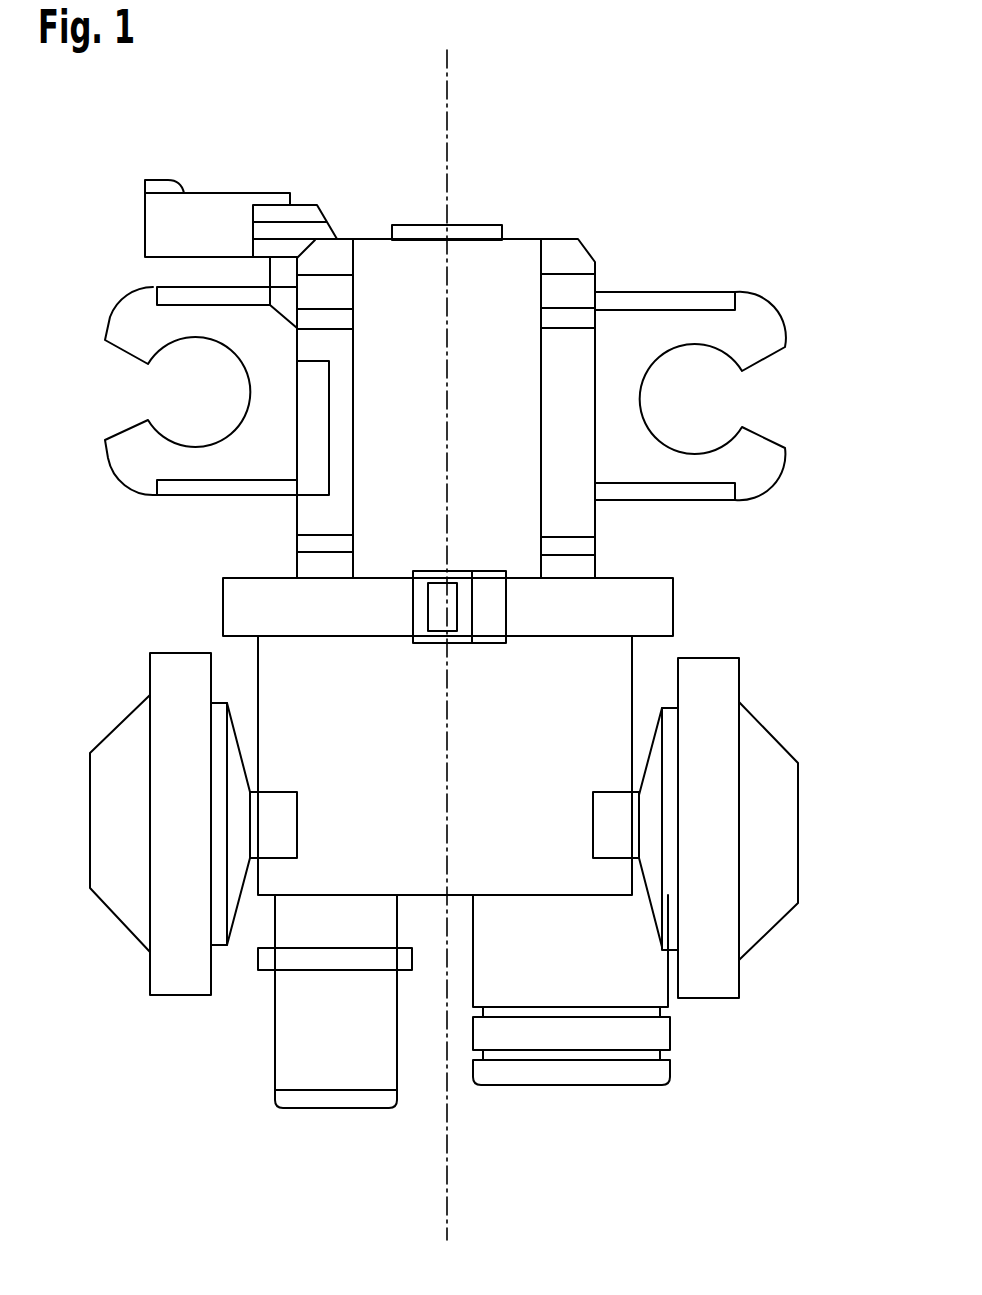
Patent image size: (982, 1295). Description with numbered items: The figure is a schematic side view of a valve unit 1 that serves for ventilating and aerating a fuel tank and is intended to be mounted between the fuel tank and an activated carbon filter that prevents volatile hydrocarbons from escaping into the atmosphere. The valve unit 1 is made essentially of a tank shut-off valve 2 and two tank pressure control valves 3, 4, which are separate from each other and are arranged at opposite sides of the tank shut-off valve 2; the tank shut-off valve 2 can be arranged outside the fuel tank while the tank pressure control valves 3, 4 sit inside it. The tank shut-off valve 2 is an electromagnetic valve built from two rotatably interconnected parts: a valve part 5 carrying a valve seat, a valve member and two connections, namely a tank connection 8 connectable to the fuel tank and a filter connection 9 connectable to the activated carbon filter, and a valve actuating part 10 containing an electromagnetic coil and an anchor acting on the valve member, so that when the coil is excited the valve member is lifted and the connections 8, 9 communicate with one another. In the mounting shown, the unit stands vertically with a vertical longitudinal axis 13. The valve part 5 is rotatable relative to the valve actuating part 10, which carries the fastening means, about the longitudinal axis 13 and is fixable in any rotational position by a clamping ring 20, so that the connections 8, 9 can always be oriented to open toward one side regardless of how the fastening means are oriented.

The valve unit 1 is at (728, 147).
The tank shut-off valve 2 is at (542, 220).
The tank pressure control valve 3 is at (183, 668).
The tank pressure control valve 4 is at (777, 765).
The valve part 5 is at (382, 822).
The tank connection 8 is at (360, 1060).
The filter connection 9 is at (550, 1037).
The valve actuating part 10 is at (498, 388).
The longitudinal axis 13 is at (447, 120).
The clamping ring 20 is at (648, 608).